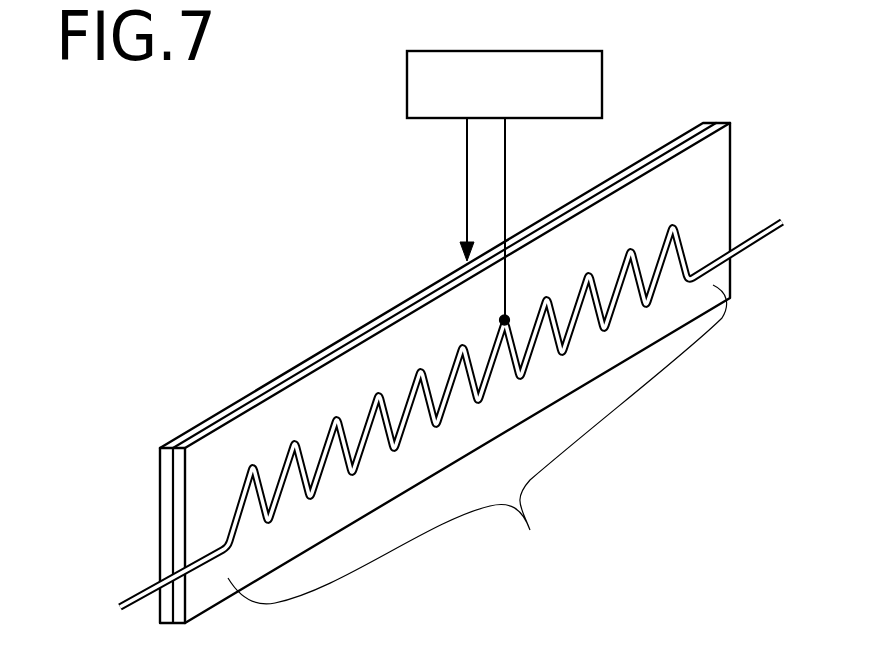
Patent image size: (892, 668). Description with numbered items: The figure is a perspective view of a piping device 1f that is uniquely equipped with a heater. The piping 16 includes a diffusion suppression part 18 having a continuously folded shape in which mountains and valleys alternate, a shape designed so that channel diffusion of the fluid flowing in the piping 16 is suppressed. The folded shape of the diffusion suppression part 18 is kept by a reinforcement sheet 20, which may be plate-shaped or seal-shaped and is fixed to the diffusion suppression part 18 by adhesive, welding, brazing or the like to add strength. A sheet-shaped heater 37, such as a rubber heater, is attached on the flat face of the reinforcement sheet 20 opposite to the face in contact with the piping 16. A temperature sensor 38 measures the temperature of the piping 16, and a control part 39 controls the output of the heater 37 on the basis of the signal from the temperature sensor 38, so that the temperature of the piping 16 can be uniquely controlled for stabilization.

The piping device 1f is at (360, 210).
The piping 16 is at (757, 226).
The diffusion suppression part 18 is at (477, 444).
The reinforcement sheet 20 is at (718, 123).
The heater 37 is at (697, 128).
The temperature sensor 38 is at (502, 319).
The control part 39 is at (602, 66).